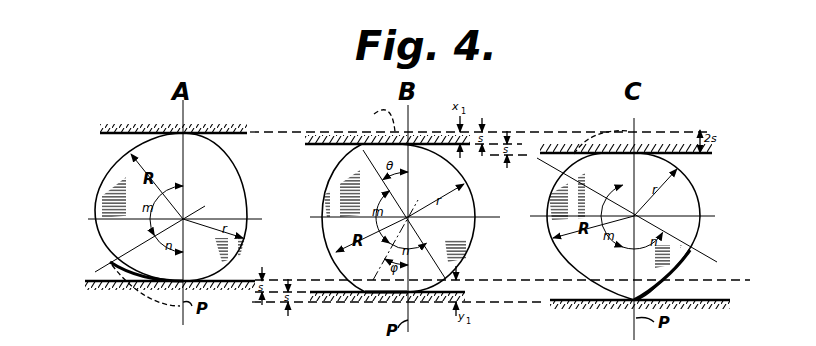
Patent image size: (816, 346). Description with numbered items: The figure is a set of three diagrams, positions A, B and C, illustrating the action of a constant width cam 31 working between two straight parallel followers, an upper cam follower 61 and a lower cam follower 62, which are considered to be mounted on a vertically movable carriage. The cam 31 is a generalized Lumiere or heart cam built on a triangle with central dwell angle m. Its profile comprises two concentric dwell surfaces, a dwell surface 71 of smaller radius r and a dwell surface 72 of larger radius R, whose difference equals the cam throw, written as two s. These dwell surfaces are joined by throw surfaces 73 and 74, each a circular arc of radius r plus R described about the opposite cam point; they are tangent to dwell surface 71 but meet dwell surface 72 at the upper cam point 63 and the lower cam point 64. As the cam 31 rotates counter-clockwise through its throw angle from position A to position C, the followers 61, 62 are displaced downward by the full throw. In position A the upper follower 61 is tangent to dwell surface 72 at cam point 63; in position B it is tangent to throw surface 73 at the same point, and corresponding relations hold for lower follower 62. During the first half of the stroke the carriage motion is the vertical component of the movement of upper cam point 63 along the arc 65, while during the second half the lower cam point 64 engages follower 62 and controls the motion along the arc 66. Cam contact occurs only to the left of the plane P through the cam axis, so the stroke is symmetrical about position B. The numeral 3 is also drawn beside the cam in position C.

The tire 3 is at (717, 185).
The constant diameter cam 31 is at (230, 170).
The upper cam follower 61 is at (236, 133).
The lower cam follower 62 is at (232, 282).
The upper cam point 63 is at (185, 133).
The lower cam point 64 is at (110, 262).
The arc of upper cam point 65 is at (612, 118).
The arc of lower cam point 66 is at (158, 306).
The dwell surface of smaller radius 71 is at (249, 212).
The dwell surface of larger radius 72 is at (116, 156).
The throw surface 73 is at (208, 148).
The throw surface 74 is at (126, 270).